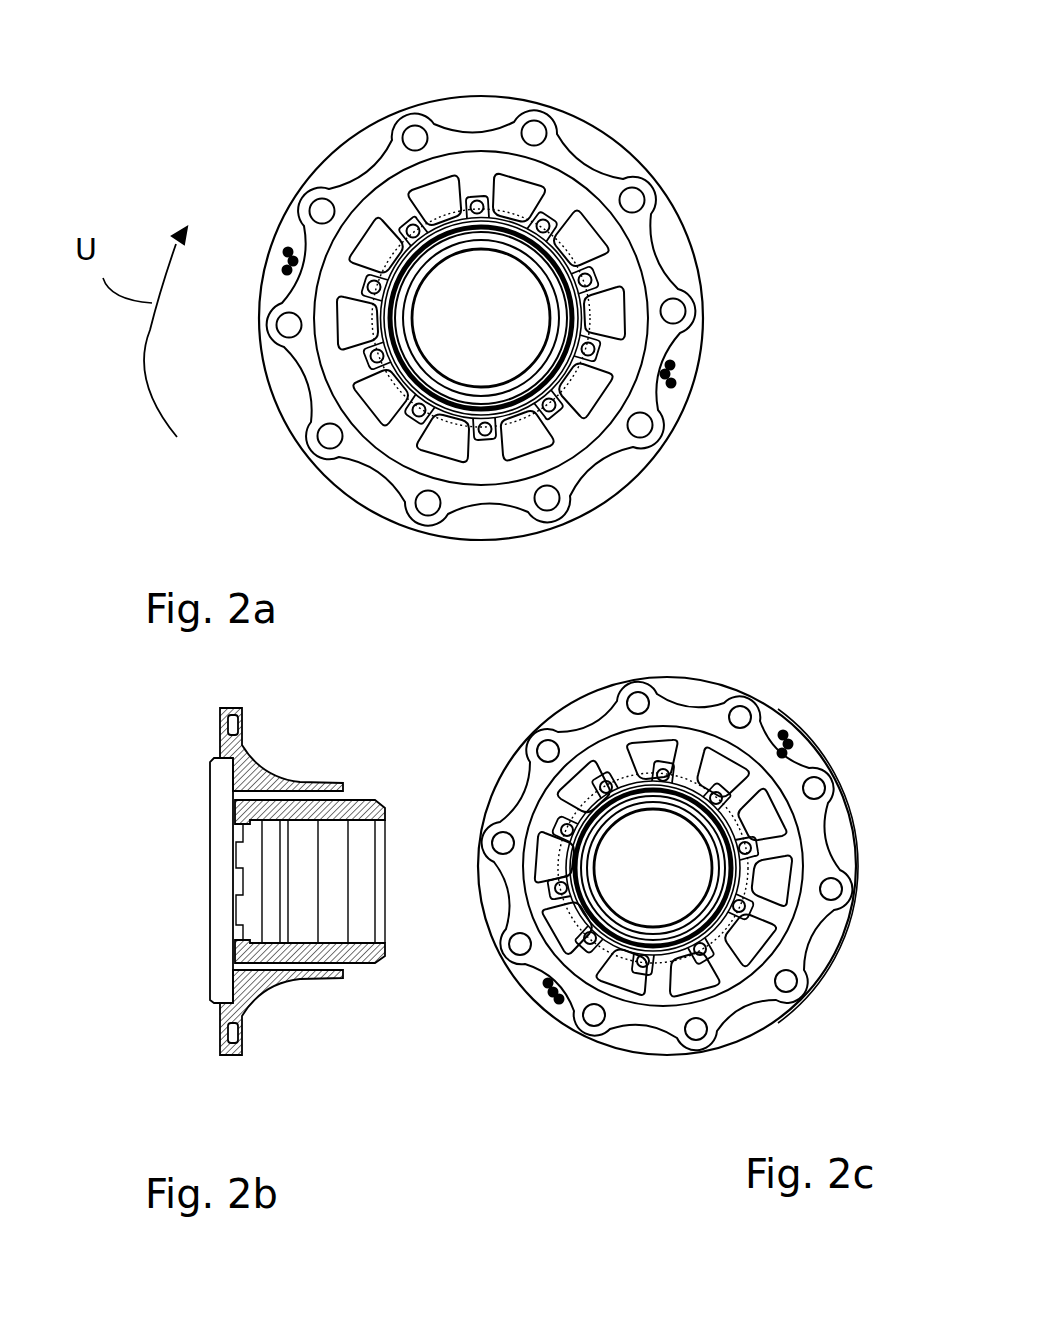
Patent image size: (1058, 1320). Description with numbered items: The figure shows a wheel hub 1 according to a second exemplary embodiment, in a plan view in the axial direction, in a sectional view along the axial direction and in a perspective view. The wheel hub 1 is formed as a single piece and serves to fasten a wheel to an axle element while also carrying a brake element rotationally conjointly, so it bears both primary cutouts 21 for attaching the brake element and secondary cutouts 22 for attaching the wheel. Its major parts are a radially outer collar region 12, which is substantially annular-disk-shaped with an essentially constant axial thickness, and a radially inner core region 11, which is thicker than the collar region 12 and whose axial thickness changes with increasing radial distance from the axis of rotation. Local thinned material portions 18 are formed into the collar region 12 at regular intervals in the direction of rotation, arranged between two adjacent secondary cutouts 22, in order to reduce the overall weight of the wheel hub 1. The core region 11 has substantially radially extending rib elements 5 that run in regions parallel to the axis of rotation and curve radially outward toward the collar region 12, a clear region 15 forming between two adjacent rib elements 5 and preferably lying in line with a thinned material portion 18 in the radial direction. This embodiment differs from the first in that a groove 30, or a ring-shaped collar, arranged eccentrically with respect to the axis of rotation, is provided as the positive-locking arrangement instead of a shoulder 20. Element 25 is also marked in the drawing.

In FIG. 2a, the wheel hub 1 is at (826, 120).
In FIG. 2c, the wheel hub 1 is at (506, 1062).
In FIG. 2a, the rib elements 5 is at (607, 290).
In FIG. 2c, the rib elements 5 is at (740, 790).
In FIG. 2a, the core region 11 is at (400, 450).
In FIG. 2b, the core region 11 is at (175, 882).
In FIG. 2a, the collar region 12 is at (660, 150).
In FIG. 2b, the collar region 12 is at (212, 756).
In FIG. 2a, the clear region 15 is at (588, 393).
In FIG. 2c, the clear region 15 is at (757, 830).
In FIG. 2a, the thinned material portions 18 is at (676, 253).
In FIG. 2a, the shoulder 20 is at (425, 212).
In FIG. 2a, the primary cutouts 21 is at (545, 226).
In FIG. 2c, the primary cutouts 21 is at (663, 772).
In FIG. 2a, the secondary cutouts 22 is at (537, 130).
In FIG. 2c, the secondary cutouts 22 is at (833, 890).
In FIG. 2a, the retaining ring 25 is at (500, 450).
In FIG. 2c, the retaining ring 25 is at (605, 780).
In FIG. 2a, the groove 30 is at (413, 228).
In FIG. 2c, the groove 30 is at (683, 790).